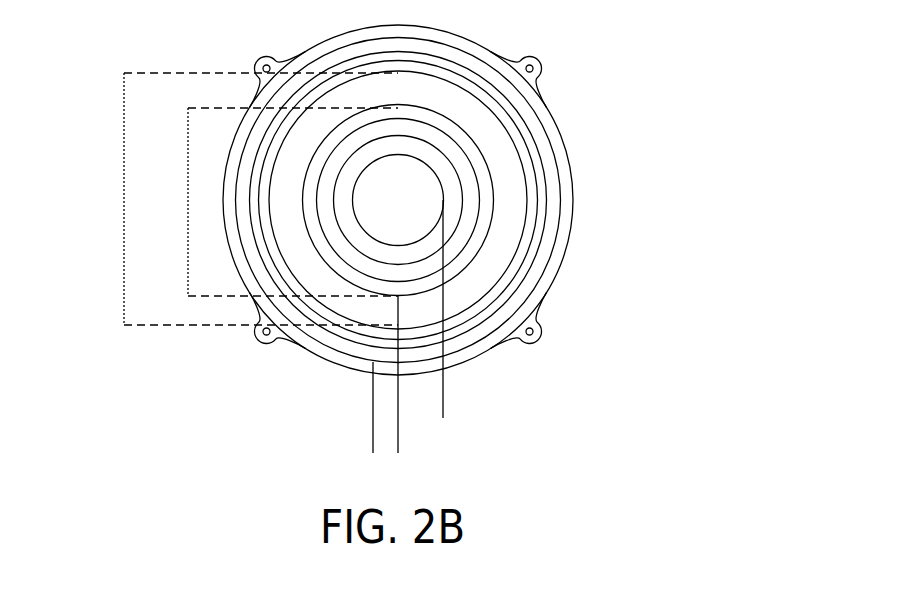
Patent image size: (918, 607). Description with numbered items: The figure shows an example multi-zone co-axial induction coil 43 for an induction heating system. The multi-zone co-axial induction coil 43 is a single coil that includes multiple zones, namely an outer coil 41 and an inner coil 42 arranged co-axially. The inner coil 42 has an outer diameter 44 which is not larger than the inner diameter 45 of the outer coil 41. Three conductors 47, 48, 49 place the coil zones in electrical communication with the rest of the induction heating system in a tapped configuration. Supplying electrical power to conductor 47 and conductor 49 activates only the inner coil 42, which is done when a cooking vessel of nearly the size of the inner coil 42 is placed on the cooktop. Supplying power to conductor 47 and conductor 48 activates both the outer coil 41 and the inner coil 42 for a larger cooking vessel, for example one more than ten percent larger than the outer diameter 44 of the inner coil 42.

The outer coil 41 is at (560, 180).
The inner coil 42 is at (487, 242).
The multi-zone co-axial induction coil 43 is at (718, 58).
The outer diameter 44 is at (176, 147).
The inner diameter 45 is at (115, 177).
The conductor 47 is at (460, 400).
The conductor 48 is at (365, 413).
The conductor 49 is at (412, 441).